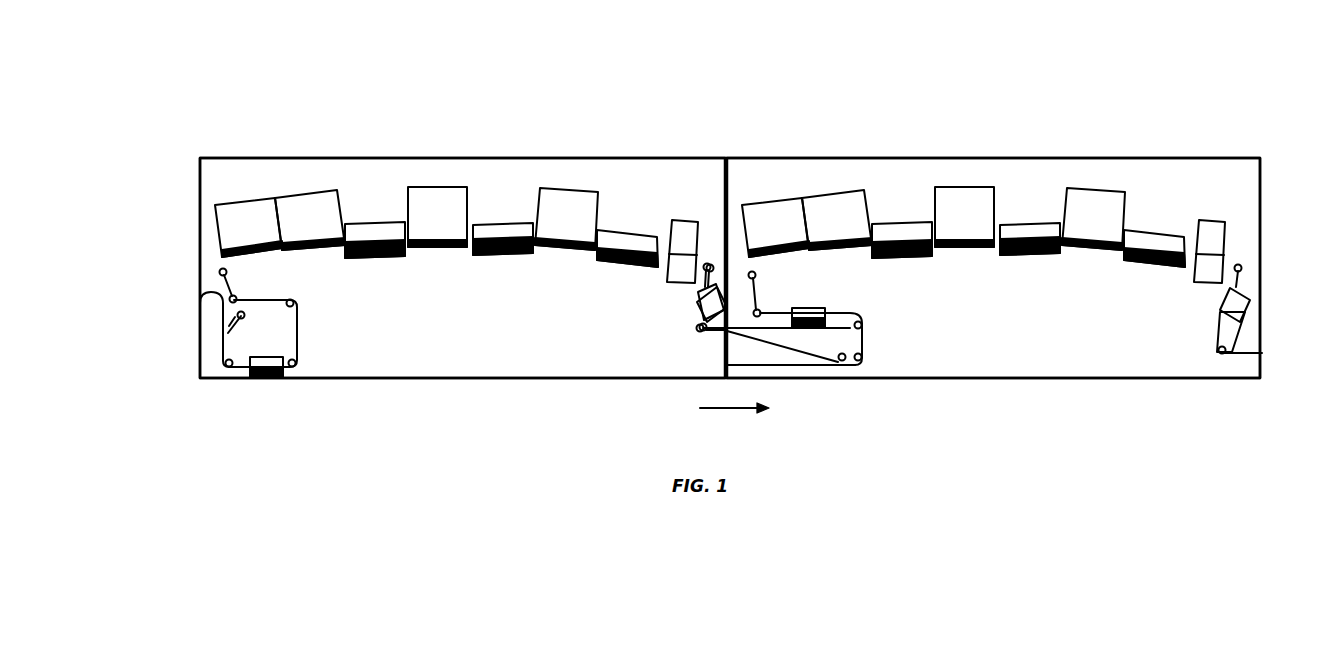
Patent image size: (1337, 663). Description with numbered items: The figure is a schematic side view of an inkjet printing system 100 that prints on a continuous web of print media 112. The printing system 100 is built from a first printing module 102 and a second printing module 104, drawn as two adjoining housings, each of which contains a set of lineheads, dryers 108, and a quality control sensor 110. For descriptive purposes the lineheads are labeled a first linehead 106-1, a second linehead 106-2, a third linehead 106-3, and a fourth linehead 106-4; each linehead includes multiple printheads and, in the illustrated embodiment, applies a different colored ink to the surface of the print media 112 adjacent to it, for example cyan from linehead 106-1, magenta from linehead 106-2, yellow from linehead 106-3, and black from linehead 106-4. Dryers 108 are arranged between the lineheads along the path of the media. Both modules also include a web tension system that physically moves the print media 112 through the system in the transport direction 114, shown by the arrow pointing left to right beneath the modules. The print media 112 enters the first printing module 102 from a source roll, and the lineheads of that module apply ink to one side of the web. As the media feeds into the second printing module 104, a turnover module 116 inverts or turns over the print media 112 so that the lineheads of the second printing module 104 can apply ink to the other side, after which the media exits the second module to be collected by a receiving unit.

The printing system 100 is at (773, 57).
The first printing module 102 is at (653, 158).
The second printing module 104 is at (1182, 158).
The first linehead 106-1 is at (233, 204).
The second linehead 106-2 is at (318, 196).
The third linehead 106-3 is at (440, 186).
The fourth linehead 106-4 is at (568, 190).
The dryers 108 is at (388, 262).
The quality control sensor 110 is at (694, 220).
The print media 112 is at (200, 305).
The transport direction arrow 114 is at (726, 412).
The turnover module 116 is at (865, 338).